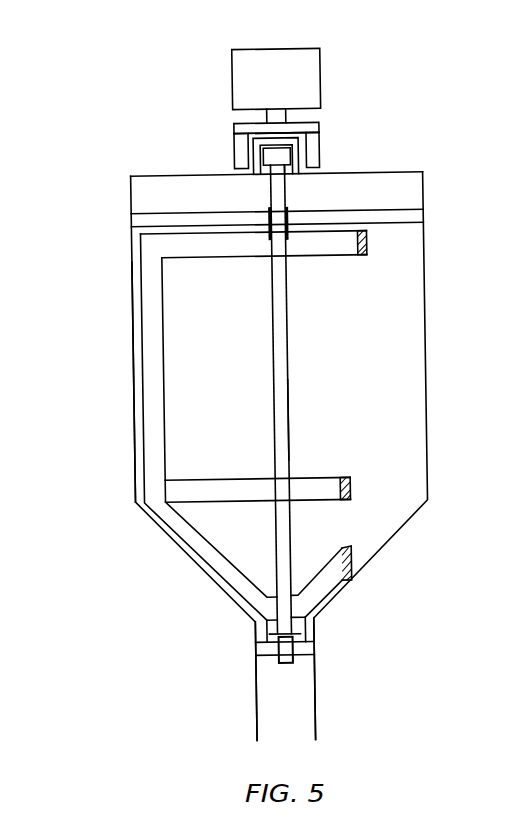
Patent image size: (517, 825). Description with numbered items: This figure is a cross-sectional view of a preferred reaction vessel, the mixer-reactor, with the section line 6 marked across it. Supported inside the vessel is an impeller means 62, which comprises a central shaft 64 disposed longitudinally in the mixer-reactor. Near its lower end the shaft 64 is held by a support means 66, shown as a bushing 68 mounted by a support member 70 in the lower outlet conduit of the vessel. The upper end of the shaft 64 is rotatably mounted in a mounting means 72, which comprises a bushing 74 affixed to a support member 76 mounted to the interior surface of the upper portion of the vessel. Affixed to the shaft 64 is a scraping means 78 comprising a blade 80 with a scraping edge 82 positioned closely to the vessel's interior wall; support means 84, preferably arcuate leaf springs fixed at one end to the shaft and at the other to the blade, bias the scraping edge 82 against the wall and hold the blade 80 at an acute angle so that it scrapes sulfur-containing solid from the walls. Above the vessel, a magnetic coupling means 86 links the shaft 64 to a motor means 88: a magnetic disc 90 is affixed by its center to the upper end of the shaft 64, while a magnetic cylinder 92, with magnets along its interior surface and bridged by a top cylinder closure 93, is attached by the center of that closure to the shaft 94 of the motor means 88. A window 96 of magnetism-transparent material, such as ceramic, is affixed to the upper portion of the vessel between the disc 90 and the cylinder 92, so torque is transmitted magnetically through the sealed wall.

The section line 6- 6 is at (277, 269).
The impeller means 62 is at (296, 328).
The central shaft 64 is at (285, 417).
The support means 66 is at (322, 635).
The bushing 68 is at (276, 666).
The support member 70 is at (310, 648).
The mounting means 72 is at (304, 202).
The bushing 74 is at (267, 207).
The support member 76 is at (192, 218).
The scraping means 78 is at (131, 446).
The blade 80 is at (138, 391).
The scraping edge 82 is at (136, 348).
The support means 84 is at (222, 256).
The magnetic coupling means 86 is at (360, 139).
The motor means 88 is at (276, 78).
The magnetic disc 90 is at (276, 156).
The magnetic cylinder 92 is at (321, 148).
The top cylinder closure 93 is at (234, 124).
The shaft 94 is at (288, 117).
The window 96 is at (292, 170).